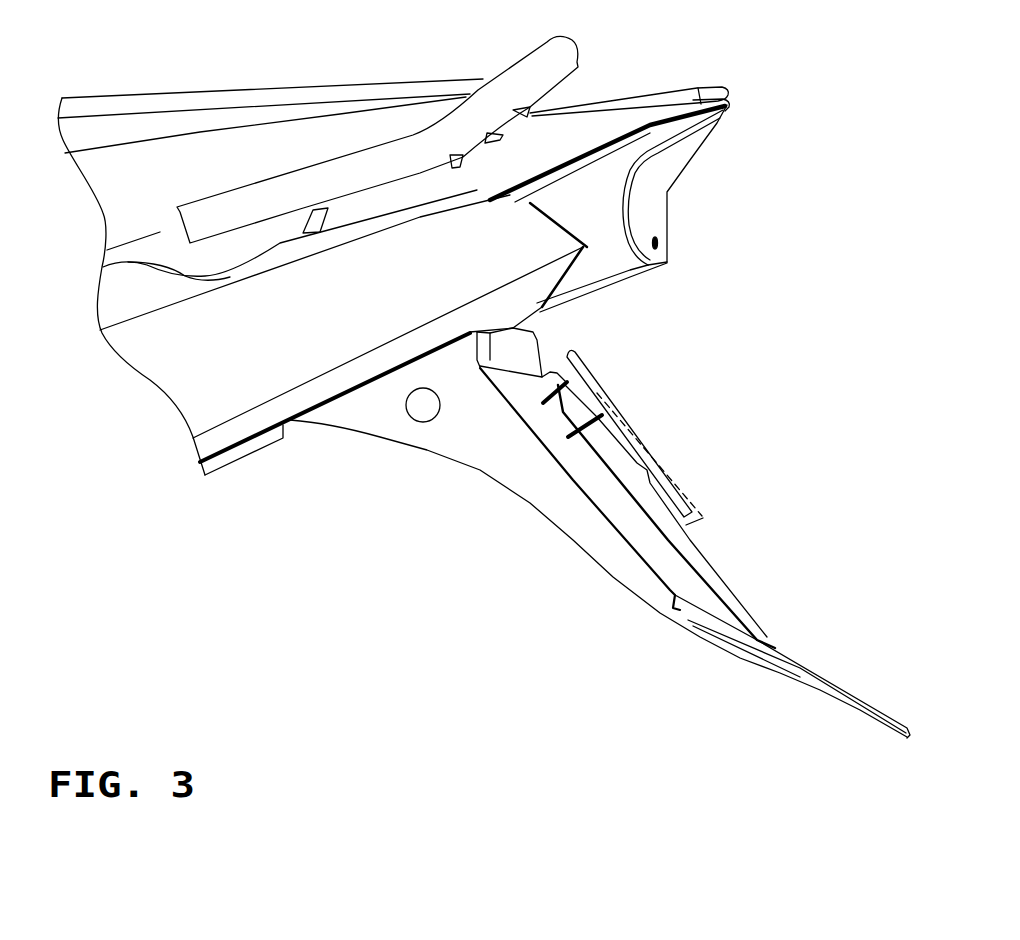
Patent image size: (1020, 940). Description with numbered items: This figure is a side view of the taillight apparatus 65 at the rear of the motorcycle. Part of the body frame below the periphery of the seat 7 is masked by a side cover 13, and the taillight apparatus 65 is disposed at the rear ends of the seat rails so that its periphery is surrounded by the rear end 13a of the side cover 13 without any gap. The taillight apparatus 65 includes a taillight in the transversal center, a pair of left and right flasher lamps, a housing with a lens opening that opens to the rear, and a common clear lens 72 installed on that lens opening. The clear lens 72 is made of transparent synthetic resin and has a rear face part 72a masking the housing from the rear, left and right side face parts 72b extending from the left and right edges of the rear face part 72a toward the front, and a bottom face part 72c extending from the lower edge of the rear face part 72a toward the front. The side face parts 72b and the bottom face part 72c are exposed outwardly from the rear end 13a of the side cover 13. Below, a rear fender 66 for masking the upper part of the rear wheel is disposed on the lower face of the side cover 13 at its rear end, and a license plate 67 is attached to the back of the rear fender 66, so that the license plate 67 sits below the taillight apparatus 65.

The seat 7 is at (205, 92).
The side cover 13 is at (182, 264).
The rear end of the side cover 13a is at (615, 100).
The taillight apparatus 65 is at (704, 148).
The clear lens 72 is at (661, 235).
The rear face part 72a is at (657, 185).
The side face part 72b is at (612, 263).
The bottom face part 72c is at (612, 290).
The rear fender 66 is at (610, 573).
The license plate 67 is at (678, 493).